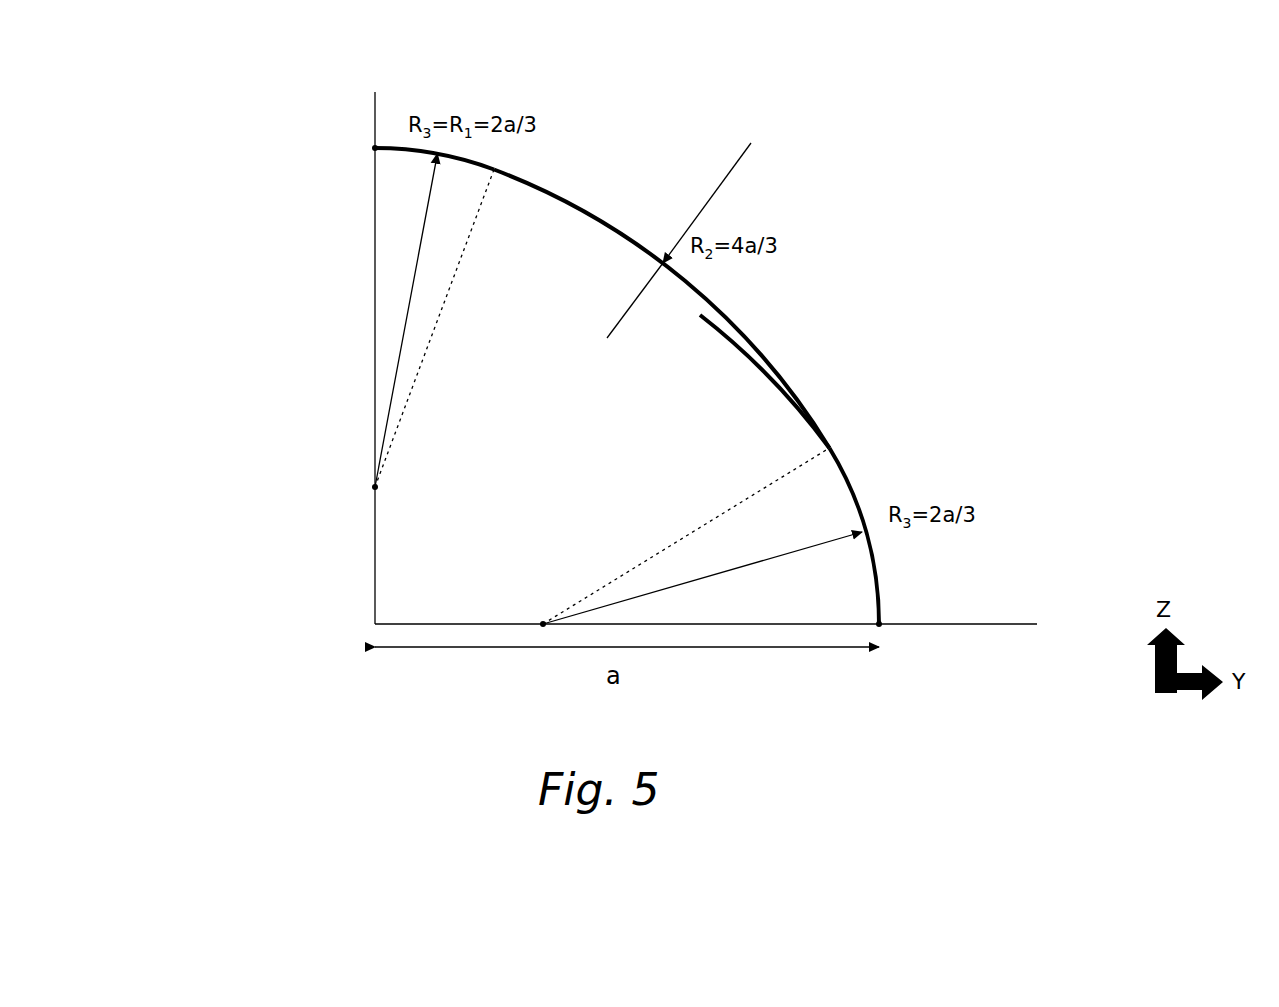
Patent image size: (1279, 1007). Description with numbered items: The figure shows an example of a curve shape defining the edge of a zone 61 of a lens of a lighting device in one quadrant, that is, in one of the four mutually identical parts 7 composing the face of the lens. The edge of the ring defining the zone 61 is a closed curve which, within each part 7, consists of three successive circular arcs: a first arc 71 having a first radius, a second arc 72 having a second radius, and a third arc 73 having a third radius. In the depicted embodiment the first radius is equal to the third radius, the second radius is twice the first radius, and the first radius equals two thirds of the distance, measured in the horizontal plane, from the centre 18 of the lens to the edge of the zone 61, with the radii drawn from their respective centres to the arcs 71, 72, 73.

The part of the lens face 7 is at (628, 340).
The first arc 71 is at (388, 158).
The second arc 72 is at (555, 190).
The third arc 73 is at (852, 487).
The zone of the lens 61 is at (728, 390).
The centre of the lens 18 is at (375, 624).